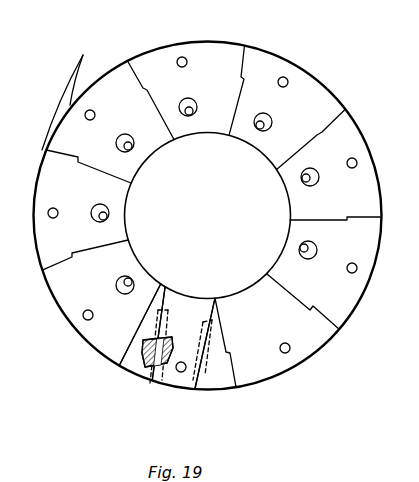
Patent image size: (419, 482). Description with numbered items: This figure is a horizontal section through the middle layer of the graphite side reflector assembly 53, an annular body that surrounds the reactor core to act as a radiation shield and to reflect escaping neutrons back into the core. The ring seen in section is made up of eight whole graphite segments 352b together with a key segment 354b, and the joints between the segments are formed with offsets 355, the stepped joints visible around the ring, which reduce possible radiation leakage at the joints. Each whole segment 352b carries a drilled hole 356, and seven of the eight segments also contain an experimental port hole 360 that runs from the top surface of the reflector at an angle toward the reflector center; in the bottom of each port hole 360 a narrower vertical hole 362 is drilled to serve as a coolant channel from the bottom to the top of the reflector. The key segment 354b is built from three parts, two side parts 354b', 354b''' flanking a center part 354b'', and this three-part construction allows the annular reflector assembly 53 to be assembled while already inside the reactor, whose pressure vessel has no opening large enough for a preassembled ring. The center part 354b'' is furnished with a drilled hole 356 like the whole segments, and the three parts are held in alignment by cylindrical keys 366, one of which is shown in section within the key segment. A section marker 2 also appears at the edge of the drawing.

The whole graphite segment 352b is at (147, 48).
The offset 355 is at (311, 308).
The drilled hole 356 is at (183, 56).
The experimental port hole 360 is at (194, 98).
The vertical hole 362 is at (117, 287).
The key segment 354b is at (177, 321).
The side part of key segment 354b' is at (108, 340).
The center part of key segment 354b'' is at (133, 353).
The side part of key segment 354b''' is at (199, 366).
The cylindrical key 366 is at (145, 338).
The graphite side reflector assembly 53 is at (326, 356).
The section line 2 is at (0, 215).